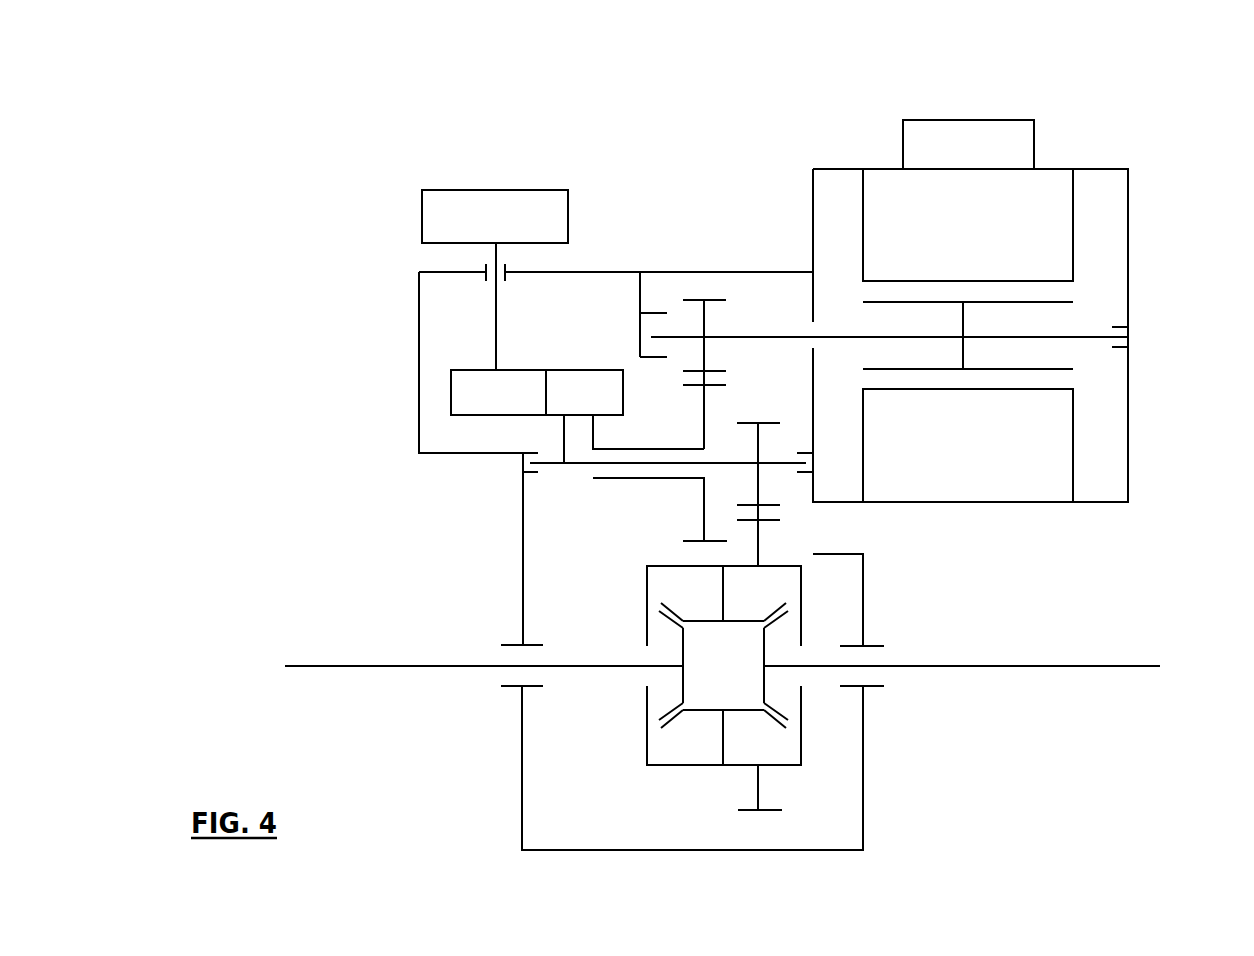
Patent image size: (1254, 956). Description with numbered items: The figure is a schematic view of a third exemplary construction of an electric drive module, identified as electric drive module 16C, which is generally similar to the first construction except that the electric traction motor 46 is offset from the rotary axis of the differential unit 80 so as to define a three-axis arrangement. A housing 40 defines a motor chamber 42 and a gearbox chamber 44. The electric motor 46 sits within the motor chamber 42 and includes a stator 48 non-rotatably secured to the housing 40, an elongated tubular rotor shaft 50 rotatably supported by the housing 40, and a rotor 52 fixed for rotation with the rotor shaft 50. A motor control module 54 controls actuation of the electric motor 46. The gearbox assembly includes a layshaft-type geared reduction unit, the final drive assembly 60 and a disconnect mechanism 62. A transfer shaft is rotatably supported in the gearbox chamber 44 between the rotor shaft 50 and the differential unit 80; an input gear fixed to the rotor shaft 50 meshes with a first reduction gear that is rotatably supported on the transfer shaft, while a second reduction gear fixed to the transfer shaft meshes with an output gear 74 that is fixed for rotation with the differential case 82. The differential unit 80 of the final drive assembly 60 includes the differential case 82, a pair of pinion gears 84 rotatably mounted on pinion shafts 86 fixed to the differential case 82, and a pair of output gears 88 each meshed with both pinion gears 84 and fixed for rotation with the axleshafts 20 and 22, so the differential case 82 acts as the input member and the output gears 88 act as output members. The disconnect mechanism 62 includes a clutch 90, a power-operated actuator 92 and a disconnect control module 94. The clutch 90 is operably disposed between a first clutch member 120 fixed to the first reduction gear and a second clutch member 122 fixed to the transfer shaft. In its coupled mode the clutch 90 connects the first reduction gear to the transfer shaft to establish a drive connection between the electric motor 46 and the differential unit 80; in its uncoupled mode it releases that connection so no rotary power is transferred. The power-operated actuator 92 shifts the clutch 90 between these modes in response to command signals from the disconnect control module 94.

The electric drive module 16C is at (1194, 88).
The axleshaft 20 is at (352, 665).
The axleshaft 22 is at (1081, 665).
The housing 40 is at (1128, 220).
The motor chamber 42 is at (1118, 455).
The gearbox chamber 44 is at (596, 554).
The electric traction motor 46 is at (1052, 492).
The stator 48 is at (1064, 177).
The rotor shaft 50 is at (1092, 335).
The rotor 52 is at (1058, 370).
The motor control module 54 is at (1030, 125).
The final drive assembly 60 is at (808, 750).
The disconnect mechanism 62 is at (550, 315).
The output gear 74 is at (747, 810).
The differential unit 80 is at (638, 722).
The differential case 82 is at (647, 612).
The pinion gear 84 is at (707, 620).
The pinion shaft 86 is at (725, 597).
The output gear 88 is at (763, 648).
The clutch 90 is at (603, 370).
The power-operated actuator 92 is at (470, 370).
The disconnect control module 94 is at (442, 198).
The first clutch member 120 is at (593, 430).
The second clutch member 122 is at (563, 433).